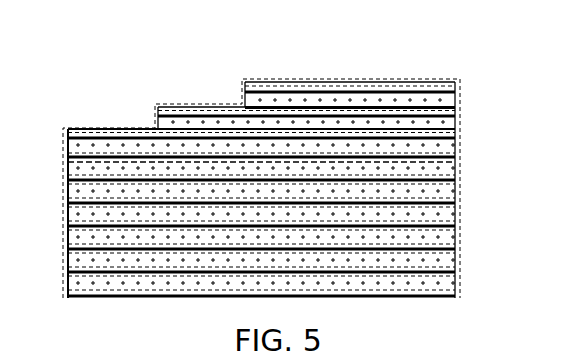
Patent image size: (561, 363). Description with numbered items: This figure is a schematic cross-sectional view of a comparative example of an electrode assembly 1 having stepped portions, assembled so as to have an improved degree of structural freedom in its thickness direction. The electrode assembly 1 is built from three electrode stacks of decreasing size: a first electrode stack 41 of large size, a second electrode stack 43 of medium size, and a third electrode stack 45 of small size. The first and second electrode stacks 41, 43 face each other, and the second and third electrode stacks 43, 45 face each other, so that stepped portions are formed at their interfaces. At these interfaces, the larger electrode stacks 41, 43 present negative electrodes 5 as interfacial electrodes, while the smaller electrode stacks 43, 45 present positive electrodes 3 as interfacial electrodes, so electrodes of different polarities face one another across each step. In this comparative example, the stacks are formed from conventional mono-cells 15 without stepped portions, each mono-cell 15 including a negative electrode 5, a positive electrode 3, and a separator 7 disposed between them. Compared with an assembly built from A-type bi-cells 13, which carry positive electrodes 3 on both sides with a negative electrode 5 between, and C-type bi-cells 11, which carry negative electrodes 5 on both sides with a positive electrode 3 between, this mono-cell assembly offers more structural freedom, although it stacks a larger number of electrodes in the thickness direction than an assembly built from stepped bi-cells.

The electrode assembly 1 is at (72, 20).
The positive electrode 3 is at (443, 110).
The negative electrode 5 is at (447, 145).
The separator 7 is at (453, 165).
The C-type bi-cell 11 is at (459, 197).
The A-type bi-cell 13 is at (459, 228).
The mono-cell 15 is at (459, 83).
The first electrode stack 41 is at (62, 128).
The second electrode stack 43 is at (154, 107).
The third electrode stack 45 is at (244, 82).